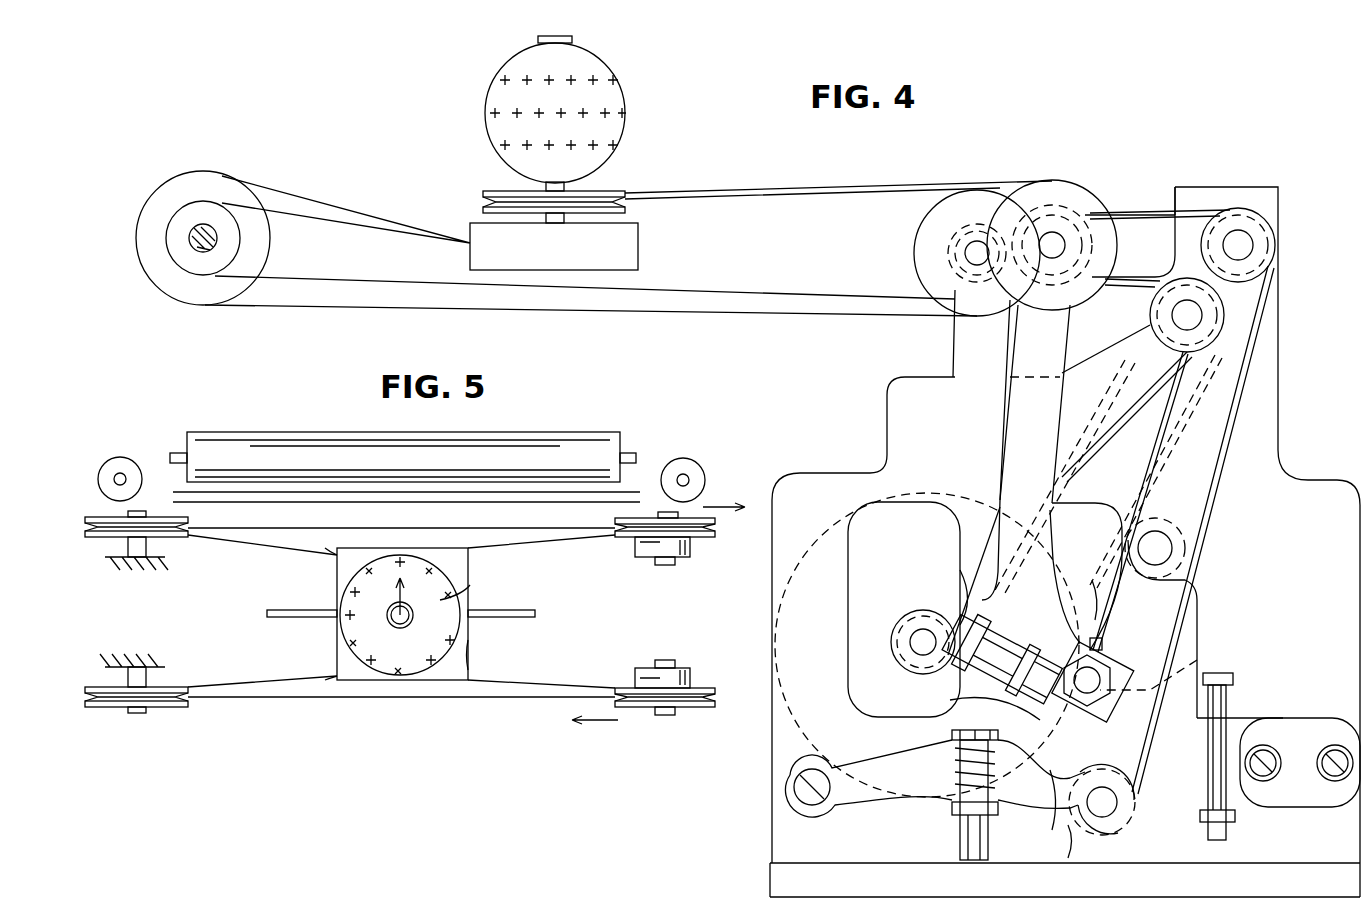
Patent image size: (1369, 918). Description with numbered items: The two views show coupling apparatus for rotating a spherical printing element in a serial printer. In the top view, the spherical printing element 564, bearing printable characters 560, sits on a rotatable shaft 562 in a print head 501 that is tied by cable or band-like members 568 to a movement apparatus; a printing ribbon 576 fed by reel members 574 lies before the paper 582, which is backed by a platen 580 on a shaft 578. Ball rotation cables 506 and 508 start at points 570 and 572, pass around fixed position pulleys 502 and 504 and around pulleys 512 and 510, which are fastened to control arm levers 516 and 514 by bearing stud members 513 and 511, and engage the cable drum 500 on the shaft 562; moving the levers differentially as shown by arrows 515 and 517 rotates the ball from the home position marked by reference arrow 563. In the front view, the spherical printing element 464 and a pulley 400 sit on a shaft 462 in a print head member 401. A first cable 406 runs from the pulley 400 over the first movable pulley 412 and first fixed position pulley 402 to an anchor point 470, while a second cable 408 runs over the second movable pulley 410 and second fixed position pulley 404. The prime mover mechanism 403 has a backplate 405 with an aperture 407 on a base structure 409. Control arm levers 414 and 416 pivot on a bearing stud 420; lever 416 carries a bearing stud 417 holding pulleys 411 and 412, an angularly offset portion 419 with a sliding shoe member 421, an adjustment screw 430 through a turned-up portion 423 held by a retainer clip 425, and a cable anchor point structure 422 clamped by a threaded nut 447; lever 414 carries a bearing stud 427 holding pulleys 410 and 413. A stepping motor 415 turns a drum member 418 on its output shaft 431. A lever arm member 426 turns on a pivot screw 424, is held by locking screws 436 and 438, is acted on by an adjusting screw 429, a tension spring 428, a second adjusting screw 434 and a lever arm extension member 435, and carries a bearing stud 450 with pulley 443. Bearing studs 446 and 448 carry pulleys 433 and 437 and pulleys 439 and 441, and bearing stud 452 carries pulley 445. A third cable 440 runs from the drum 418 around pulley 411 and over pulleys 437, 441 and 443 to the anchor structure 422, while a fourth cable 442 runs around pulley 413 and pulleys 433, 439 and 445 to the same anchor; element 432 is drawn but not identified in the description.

In FIG. 4, the pulley 400 is at (492, 190).
In FIG. 4, the print head member 401 is at (638, 240).
In FIG. 4, the first fixed position pulley 402 is at (240, 252).
In FIG. 4, the spherical printing element prime mover mechanism 403 is at (866, 453).
In FIG. 4, the second fixed position pulley 404 is at (175, 192).
In FIG. 4, the backplate member 405 is at (1278, 406).
In FIG. 4, the first flexible tension member or cable 406 is at (772, 297).
In FIG. 4, the aperture 407 is at (862, 580).
In FIG. 4, the second flexible tension member or cable 408 is at (742, 312).
In FIG. 4, the base structure 409 is at (770, 866).
In FIG. 4, the second movable pulley 410 is at (925, 226).
In FIG. 4, the pulley member 411 is at (1110, 250).
In FIG. 4, the first movable pulley 412 is at (1088, 195).
In FIG. 4, the pulley member 413 is at (946, 256).
In FIG. 4, the control arm lever 414 is at (965, 333).
In FIG. 4, the stepping motor 415 is at (822, 532).
In FIG. 4, the control arm lever 416 is at (1015, 388).
In FIG. 4, the bearing stud 417 is at (1052, 240).
In FIG. 4, the drum member 418 is at (905, 640).
In FIG. 4, the angularly offset portion 419 is at (1197, 662).
In FIG. 4, the bearing stud 420 is at (975, 685).
In FIG. 4, the shoe member 421 is at (1113, 632).
In FIG. 4, the cable anchor point structure 422 is at (1092, 682).
In FIG. 4, the turned-up portion 423 is at (925, 618).
In FIG. 4, the pivot screw 424 is at (820, 806).
In FIG. 4, the retainer clip 425 is at (1015, 640).
In FIG. 4, the lever arm member 426 is at (1045, 790).
In FIG. 4, the bearing stud 427 is at (970, 258).
In FIG. 4, the tension spring 428 is at (955, 792).
In FIG. 4, the adjusting screw 429 is at (952, 738).
In FIG. 4, the adjustment screw 430 is at (957, 580).
In FIG. 4, the output shaft 431 is at (910, 630).
In FIG. 4, the lever arm 432 is at (772, 786).
In FIG. 4, the pulley 433 is at (1152, 328).
In FIG. 4, the second adjusting screw 434 is at (1215, 840).
In FIG. 4, the lever arm extension member 435 is at (1320, 805).
In FIG. 4, the locking screw 436 is at (1263, 752).
In FIG. 4, the pulley 437 is at (1225, 300).
In FIG. 4, the locking screw 438 is at (1335, 752).
In FIG. 4, the pulley 439 is at (1278, 235).
In FIG. 4, the third flexible tension member or cable 440 is at (1110, 425).
In FIG. 4, the pulley 441 is at (1272, 228).
In FIG. 4, the fourth flexible tension member or cable 442 is at (1080, 505).
In FIG. 4, the pulley 443 is at (1070, 858).
In FIG. 4, the pulley 445 is at (1185, 570).
In FIG. 4, the bearing stud 446 is at (1200, 316).
In FIG. 4, the threaded nut 447 is at (1098, 612).
In FIG. 4, the bearing stud 448 is at (1240, 238).
In FIG. 4, the fifth bearing stud 450 is at (1108, 808).
In FIG. 4, the bearing stud 452 is at (1162, 548).
In FIG. 4, the shaft 462 is at (567, 38).
In FIG. 4, the spherical printing element 464 is at (620, 95).
In FIG. 4, the anchor point 470 is at (470, 243).
In FIG. 5, the pulley or cable drum 500 is at (395, 675).
In FIG. 5, the print head 501 is at (462, 660).
In FIG. 5, the fixed position pulley member 502 is at (165, 708).
In FIG. 5, the pulley 504 is at (100, 538).
In FIG. 5, the ball rotation cable 506 is at (510, 700).
In FIG. 5, the ball rotation cable 508 is at (480, 530).
In FIG. 5, the pulley 510 is at (702, 540).
In FIG. 5, the bearing stud member 511 is at (665, 565).
In FIG. 5, the pulley member 512 is at (705, 688).
In FIG. 5, the bearing stud member 513 is at (668, 715).
In FIG. 5, the control arm lever 514 is at (642, 545).
In FIG. 5, the arrow 515 is at (718, 503).
In FIG. 5, the control arm lever 516 is at (640, 680).
In FIG. 5, the arrow 517 is at (618, 722).
In FIG. 5, the printable characters 560 is at (356, 628).
In FIG. 5, the rotatable shaft 562 is at (415, 612).
In FIG. 5, the reference arrow 563 is at (345, 598).
In FIG. 5, the spherical printing element 564 is at (470, 587).
In FIG. 5, the cable or band-like members 568 is at (272, 614).
In FIG. 5, the point 570 is at (337, 673).
In FIG. 5, the point 572 is at (335, 556).
In FIG. 5, the reel members 574 is at (128, 462).
In FIG. 5, the printing ribbon 576 is at (250, 500).
In FIG. 5, the shaft 578 is at (178, 455).
In FIG. 5, the platen 580 is at (268, 432).
In FIG. 5, the paper or media 582 is at (335, 493).